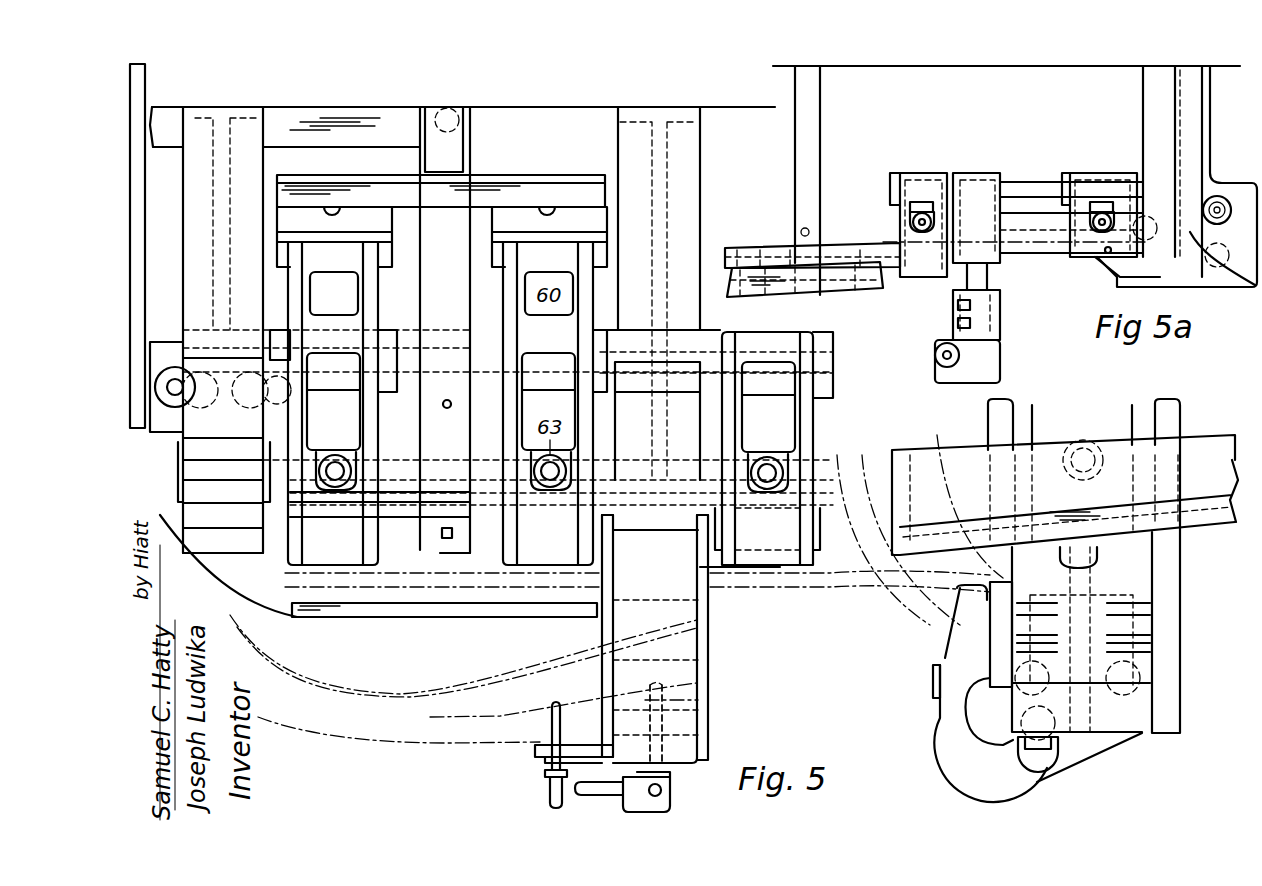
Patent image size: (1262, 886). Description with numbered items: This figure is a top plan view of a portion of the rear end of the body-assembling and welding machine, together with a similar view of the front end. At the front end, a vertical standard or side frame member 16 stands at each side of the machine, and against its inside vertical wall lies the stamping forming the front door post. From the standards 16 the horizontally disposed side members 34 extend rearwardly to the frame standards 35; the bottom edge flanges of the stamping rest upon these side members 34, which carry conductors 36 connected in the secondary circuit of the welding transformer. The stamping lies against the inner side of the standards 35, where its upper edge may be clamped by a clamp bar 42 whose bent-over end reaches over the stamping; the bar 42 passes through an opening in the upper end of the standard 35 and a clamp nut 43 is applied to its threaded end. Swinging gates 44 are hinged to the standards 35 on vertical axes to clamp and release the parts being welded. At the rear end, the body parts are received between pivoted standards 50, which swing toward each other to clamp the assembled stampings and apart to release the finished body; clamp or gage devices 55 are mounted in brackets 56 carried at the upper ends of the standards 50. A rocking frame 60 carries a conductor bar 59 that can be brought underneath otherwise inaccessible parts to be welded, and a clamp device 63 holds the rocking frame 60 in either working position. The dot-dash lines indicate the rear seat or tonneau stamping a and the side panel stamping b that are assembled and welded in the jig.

In FIG. 5A, the vertical standard or side frame member 16 is at (997, 338).
In FIG. 5, the horizontally disposed side member 34 is at (1208, 442).
In FIG. 5A, the horizontally disposed side member 34 is at (845, 247).
In FIG. 5, the frame standard 35 is at (1140, 622).
In FIG. 5, the conductor 36 is at (1069, 493).
In FIG. 5A, the conductor 36 is at (852, 288).
In FIG. 5, the clamp bar 42 is at (665, 697).
In FIG. 5, the clamp nut 43 is at (668, 800).
In FIG. 5, the swinging gate 44 is at (945, 735).
In FIG. 5, the standard 50 is at (786, 513).
In FIG. 5, the clamp or gage device 55 is at (552, 708).
In FIG. 5, the bracket 56 is at (549, 758).
In FIG. 5, the conductor bar 59 is at (444, 625).
In FIG. 5, the rocking frame 60 is at (441, 370).
In FIG. 5, the clamp device 63 is at (335, 455).
In FIG. 5, the tonneau body or rear seat stamping a is at (463, 686).
In FIG. 5, the side panel or stamping b is at (806, 582).